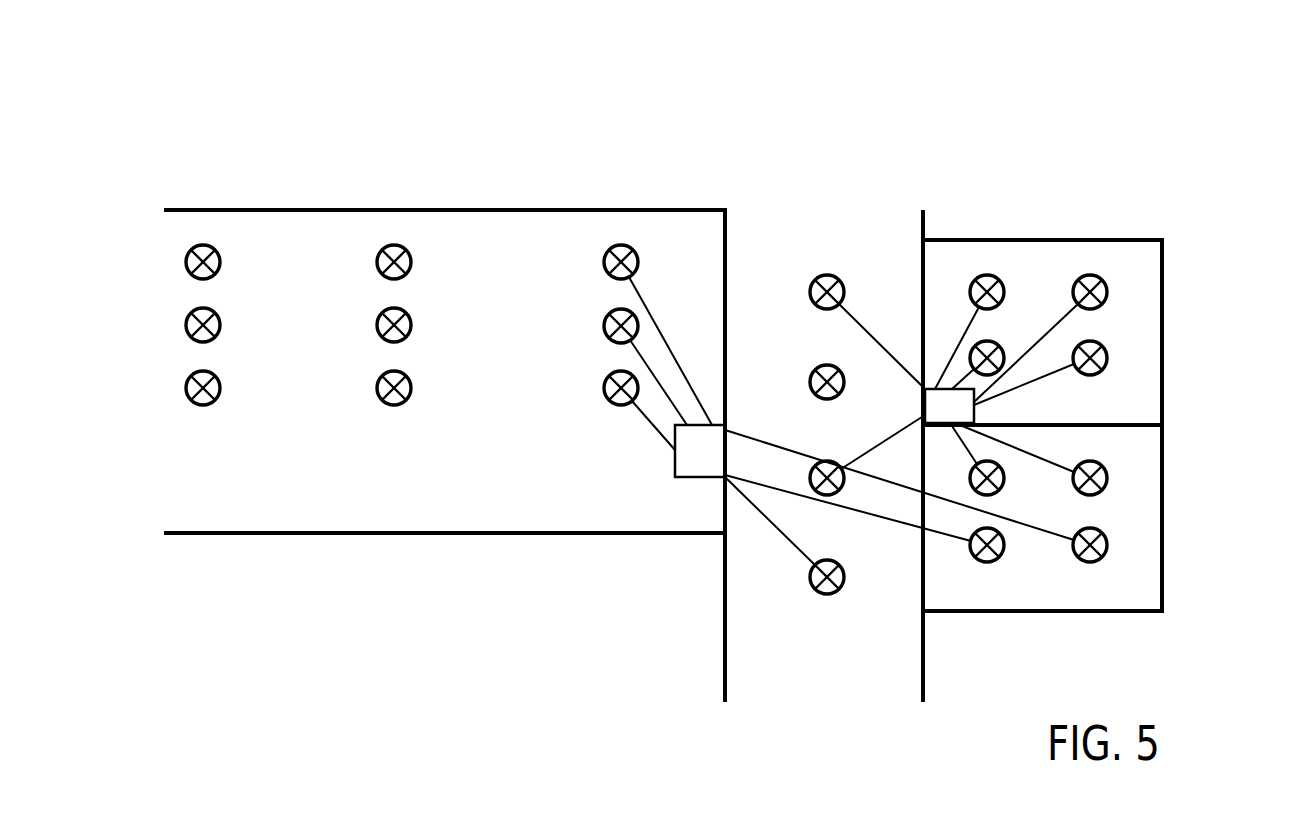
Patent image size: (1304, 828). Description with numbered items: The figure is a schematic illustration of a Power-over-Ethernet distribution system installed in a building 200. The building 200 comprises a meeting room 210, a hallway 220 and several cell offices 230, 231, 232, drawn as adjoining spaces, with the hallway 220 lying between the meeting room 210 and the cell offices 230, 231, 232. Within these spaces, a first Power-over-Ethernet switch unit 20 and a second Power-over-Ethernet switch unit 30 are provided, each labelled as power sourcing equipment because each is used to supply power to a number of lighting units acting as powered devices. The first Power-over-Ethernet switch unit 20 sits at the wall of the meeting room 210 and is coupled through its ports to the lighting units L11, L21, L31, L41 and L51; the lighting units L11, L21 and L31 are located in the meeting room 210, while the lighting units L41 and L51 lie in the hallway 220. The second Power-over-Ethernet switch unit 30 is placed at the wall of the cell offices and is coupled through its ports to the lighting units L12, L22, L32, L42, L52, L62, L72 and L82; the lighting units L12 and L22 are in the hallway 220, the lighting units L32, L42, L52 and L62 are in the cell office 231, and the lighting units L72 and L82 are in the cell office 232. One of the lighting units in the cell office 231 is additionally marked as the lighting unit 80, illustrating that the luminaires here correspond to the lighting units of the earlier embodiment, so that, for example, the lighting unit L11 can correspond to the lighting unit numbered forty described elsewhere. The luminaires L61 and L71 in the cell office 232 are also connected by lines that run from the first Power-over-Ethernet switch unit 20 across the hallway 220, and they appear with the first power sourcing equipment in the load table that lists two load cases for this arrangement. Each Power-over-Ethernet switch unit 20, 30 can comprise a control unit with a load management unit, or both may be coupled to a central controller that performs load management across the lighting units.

The building 200 is at (343, 112).
The meeting room 210 is at (500, 222).
The hallway 220 is at (850, 674).
The cell office 230 is at (1052, 198).
The cell office 231 is at (1152, 395).
The cell office 232 is at (1148, 544).
The first Power-over-Ethernet switch unit 20 is at (690, 478).
The second Power-over-Ethernet switch unit 30 is at (940, 398).
The lighting unit 80 is at (1108, 355).
The lighting unit L11 is at (634, 335).
The lighting unit L21 is at (622, 367).
The lighting unit L31 is at (616, 410).
The lighting unit L12 is at (842, 332).
The lighting unit L41 is at (802, 382).
The lighting unit L22 is at (867, 458).
The lighting unit L51 is at (849, 577).
The lighting unit L32 is at (991, 332).
The lighting unit L42 is at (1063, 338).
The lighting unit L52 is at (995, 351).
The lighting unit L62 is at (1063, 363).
The lighting unit L72 is at (999, 459).
The lighting unit L82 is at (1054, 459).
The luminaire L61 is at (988, 564).
The luminaire L71 is at (1091, 564).